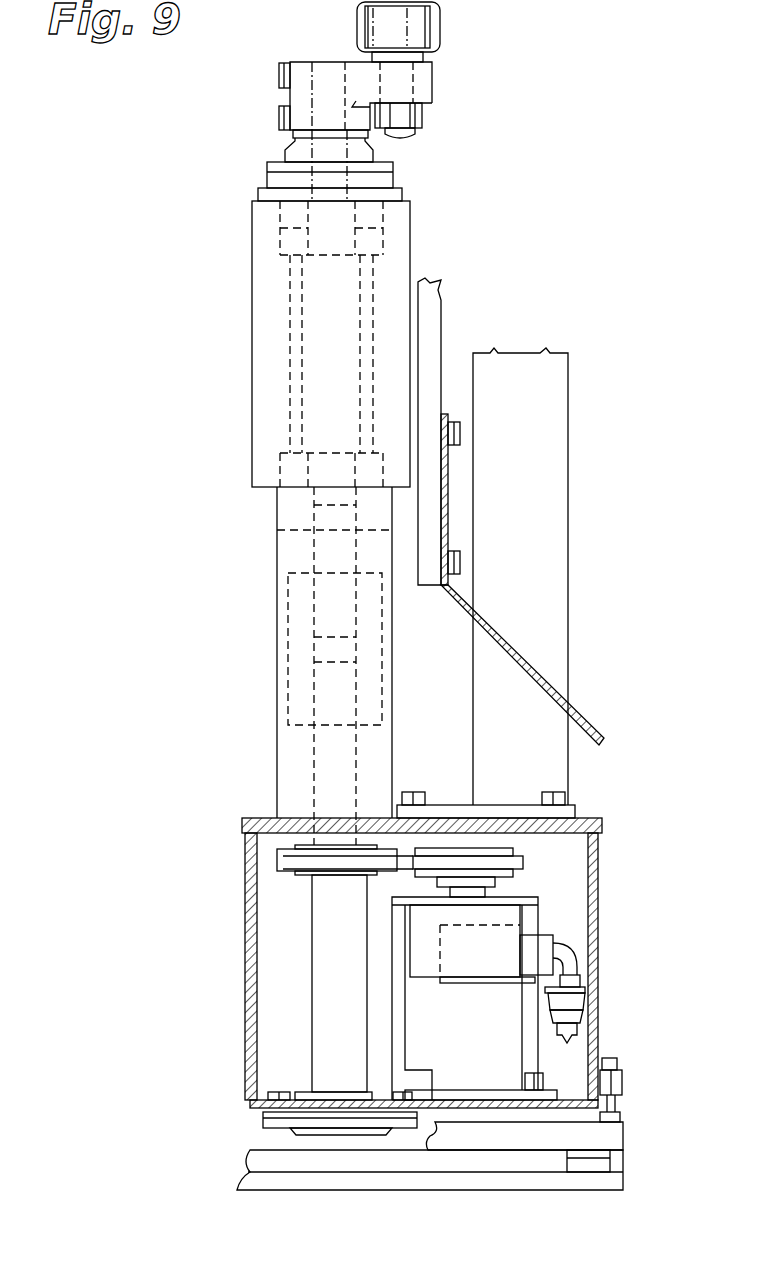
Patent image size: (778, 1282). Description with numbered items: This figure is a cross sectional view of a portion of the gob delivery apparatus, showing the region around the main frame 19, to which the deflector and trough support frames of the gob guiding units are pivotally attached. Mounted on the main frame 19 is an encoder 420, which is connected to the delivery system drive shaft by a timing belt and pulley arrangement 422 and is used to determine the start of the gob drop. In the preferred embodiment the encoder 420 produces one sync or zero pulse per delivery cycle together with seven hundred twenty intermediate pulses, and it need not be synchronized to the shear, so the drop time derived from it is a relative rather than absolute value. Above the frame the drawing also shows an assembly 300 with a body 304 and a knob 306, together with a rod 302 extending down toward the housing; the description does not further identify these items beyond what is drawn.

The main frame 19 is at (538, 500).
The pneumatic actuator assembly 300 is at (348, 101).
The cylinder rod 302 is at (326, 752).
The valve body 304 is at (414, 100).
The valve knob 306 is at (460, 32).
The encoder 420 is at (508, 940).
The timing belt and pulley arrangement 422 is at (512, 858).